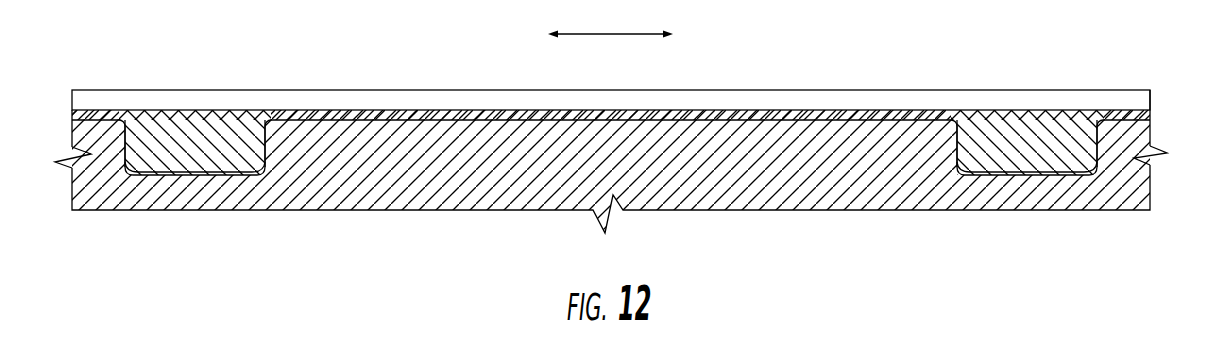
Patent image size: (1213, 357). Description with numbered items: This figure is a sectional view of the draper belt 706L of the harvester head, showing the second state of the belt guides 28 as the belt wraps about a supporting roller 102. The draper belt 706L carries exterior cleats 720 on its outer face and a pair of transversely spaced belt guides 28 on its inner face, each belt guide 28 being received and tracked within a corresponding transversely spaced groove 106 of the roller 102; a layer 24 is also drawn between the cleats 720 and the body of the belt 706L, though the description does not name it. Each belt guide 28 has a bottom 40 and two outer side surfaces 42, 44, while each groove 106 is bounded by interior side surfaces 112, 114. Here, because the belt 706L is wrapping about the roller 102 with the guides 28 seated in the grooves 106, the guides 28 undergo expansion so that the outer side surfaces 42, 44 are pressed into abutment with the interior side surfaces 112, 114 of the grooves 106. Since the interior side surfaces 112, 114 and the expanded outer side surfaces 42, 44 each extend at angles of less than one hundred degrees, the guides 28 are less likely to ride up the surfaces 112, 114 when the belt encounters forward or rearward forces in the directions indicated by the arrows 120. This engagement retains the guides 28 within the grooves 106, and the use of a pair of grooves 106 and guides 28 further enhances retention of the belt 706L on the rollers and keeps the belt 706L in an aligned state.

The roller 102 is at (1148, 137).
The exterior cleats 720 is at (430, 97).
The adhesive layer 24 is at (774, 109).
The groove 106 is at (123, 137).
The bottom 40 is at (192, 172).
The belt guide 28 is at (266, 124).
The outer side surface 42 is at (134, 146).
The outer side surface 44 is at (258, 146).
The interior side surface 112 is at (125, 157).
The interior side surface 114 is at (267, 155).
The arrows 120 is at (615, 36).
The draper belt 706L is at (1141, 106).